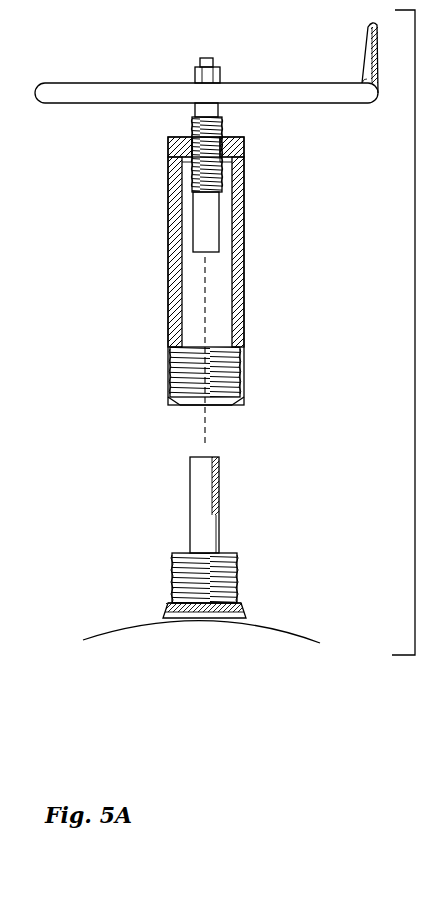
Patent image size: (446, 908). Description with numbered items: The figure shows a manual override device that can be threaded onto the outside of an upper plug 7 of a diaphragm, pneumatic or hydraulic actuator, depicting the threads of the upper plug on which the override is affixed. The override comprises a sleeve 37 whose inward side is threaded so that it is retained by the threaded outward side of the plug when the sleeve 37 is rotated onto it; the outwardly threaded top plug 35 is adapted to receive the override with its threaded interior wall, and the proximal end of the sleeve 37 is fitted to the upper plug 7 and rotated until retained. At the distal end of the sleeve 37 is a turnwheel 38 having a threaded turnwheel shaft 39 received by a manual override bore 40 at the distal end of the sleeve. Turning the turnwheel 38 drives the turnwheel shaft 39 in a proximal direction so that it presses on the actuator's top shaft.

The upper plug 7 is at (217, 580).
The outwardly threaded top plug 35 is at (170, 565).
The sleeve 37 is at (222, 305).
The turnwheel 38 is at (287, 102).
The threaded turnwheel shaft 39 is at (197, 175).
The manual override bore 40 is at (217, 142).